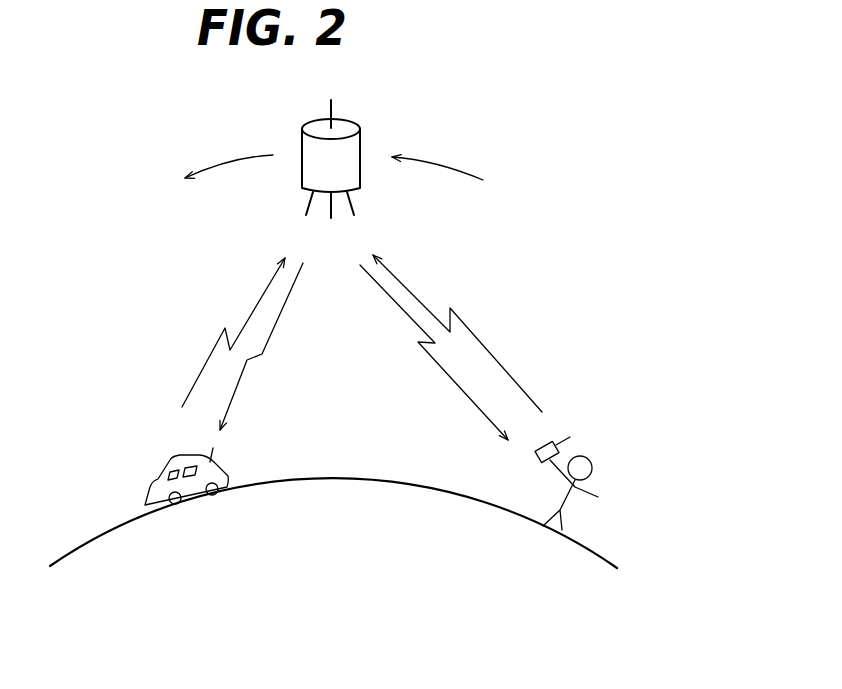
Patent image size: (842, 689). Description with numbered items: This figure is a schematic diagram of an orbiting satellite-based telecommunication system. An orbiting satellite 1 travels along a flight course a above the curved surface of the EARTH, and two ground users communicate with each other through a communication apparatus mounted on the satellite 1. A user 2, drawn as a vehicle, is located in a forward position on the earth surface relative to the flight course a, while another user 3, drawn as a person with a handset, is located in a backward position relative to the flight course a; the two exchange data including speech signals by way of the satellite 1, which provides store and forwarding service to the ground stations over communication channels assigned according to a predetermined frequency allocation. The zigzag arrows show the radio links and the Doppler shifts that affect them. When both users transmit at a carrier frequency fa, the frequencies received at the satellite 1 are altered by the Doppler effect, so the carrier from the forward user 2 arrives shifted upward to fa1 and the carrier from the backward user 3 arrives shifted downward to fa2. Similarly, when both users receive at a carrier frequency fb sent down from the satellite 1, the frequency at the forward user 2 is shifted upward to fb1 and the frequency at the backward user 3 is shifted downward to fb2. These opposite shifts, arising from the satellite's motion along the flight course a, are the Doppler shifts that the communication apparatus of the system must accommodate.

The orbiting satellite 1 is at (360, 150).
The user (ground station) 2 is at (160, 470).
The user (ground station) 3 is at (578, 437).
The flight course a is at (227, 163).
The Doppler-shifted uplink carrier frequency fa1 is at (223, 325).
The Doppler-shifted downlink carrier frequency fb1 is at (272, 353).
The Doppler-shifted uplink carrier frequency fa2 is at (469, 329).
The Doppler-shifted downlink carrier frequency fb2 is at (422, 355).
The earth EARTH is at (472, 500).